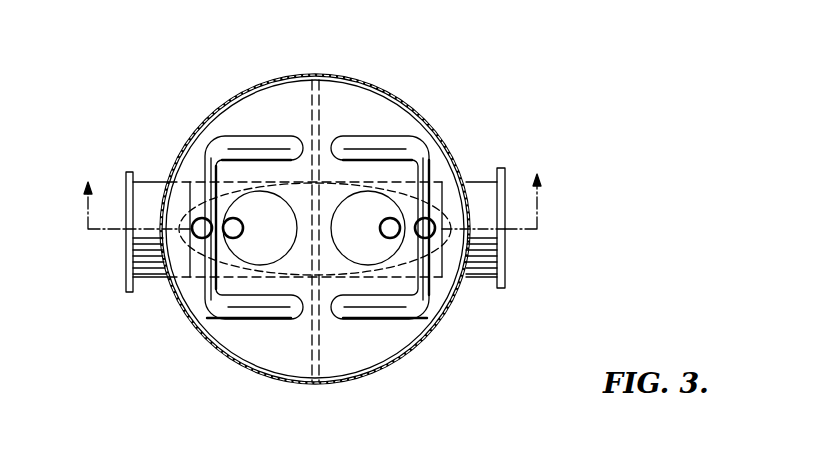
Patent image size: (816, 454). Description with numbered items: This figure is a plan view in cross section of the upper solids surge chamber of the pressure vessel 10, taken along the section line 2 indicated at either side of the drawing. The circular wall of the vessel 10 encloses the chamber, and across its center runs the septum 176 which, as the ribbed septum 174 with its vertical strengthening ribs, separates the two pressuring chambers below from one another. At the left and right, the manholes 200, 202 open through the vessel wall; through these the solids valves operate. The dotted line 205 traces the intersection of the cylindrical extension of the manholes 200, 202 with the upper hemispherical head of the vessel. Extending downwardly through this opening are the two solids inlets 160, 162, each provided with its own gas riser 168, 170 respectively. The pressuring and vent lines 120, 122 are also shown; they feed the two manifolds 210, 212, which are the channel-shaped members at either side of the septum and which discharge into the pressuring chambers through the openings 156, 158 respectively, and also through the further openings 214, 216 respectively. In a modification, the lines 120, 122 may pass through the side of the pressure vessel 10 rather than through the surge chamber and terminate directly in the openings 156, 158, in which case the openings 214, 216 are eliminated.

The section line 2- 2 is at (314, 193).
The pressure vessel 10 is at (428, 125).
The pressuring and vent line 120 is at (193, 229).
The pressuring and vent line 122 is at (432, 221).
The opening 156 is at (268, 200).
The opening 158 is at (380, 235).
The solids inlet 160 is at (267, 253).
The solids inlet 162 is at (382, 248).
The gas riser 168 is at (238, 220).
The gas riser 170 is at (382, 226).
The ribbed septum 174 is at (315, 381).
The vertical strengthening rib 176 is at (306, 365).
The manhole 200 is at (127, 286).
The manhole 202 is at (506, 252).
The dotted line 205 is at (222, 268).
The manifold 210 is at (245, 94).
The manifold 212 is at (436, 166).
The opening 214 is at (288, 320).
The opening 216 is at (349, 300).